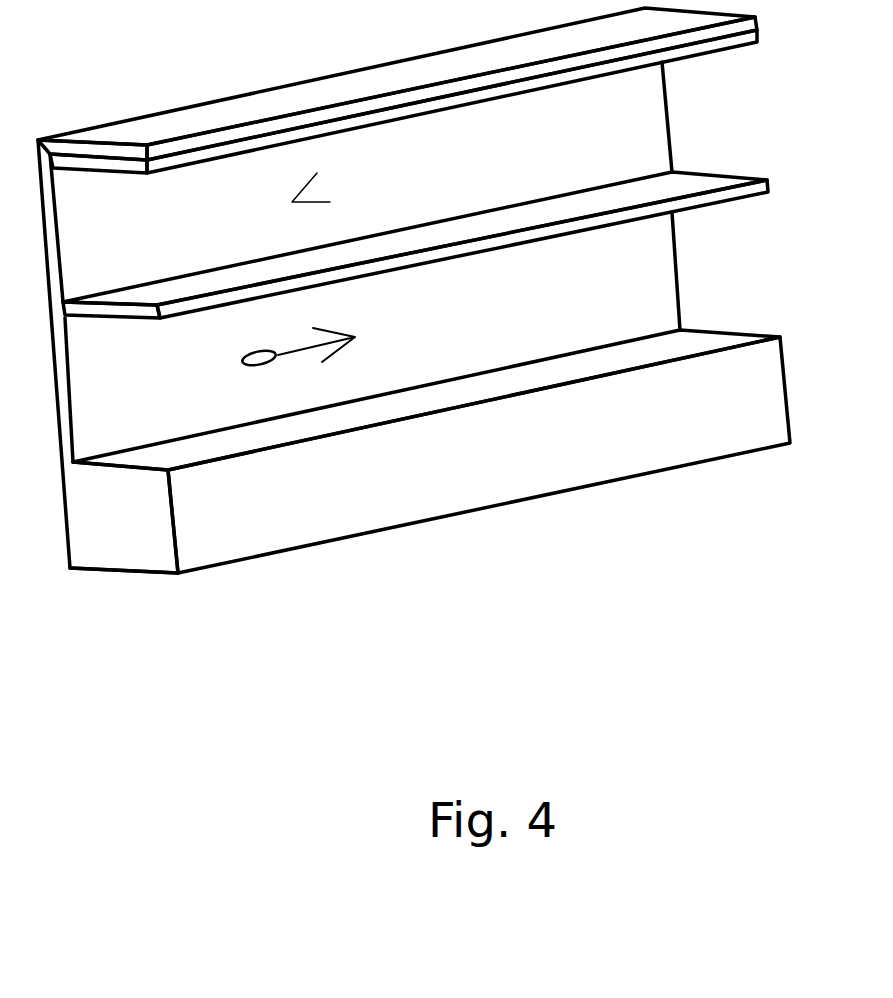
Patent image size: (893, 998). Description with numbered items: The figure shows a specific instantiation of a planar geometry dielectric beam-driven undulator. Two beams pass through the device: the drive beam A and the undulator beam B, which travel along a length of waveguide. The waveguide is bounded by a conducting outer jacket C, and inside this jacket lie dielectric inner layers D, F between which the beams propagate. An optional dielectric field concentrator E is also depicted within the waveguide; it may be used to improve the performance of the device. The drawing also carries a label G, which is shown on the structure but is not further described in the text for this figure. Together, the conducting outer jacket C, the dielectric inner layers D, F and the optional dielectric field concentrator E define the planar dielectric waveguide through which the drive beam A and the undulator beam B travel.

The drive beam A is at (257, 363).
The undulator beam B is at (352, 176).
The conducting outer jacket C is at (252, 110).
The dielectric inner layer D is at (408, 110).
The dielectric field concentrator E is at (517, 218).
The dielectric inner layer F is at (452, 394).
The back wall G is at (359, 317).